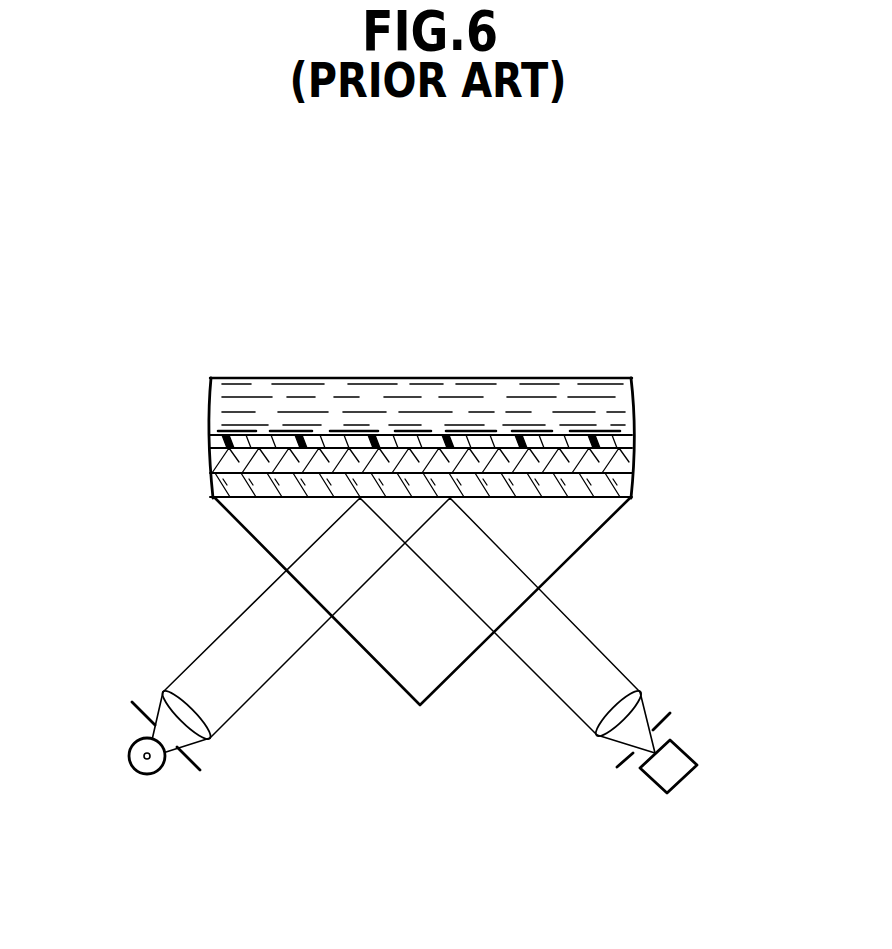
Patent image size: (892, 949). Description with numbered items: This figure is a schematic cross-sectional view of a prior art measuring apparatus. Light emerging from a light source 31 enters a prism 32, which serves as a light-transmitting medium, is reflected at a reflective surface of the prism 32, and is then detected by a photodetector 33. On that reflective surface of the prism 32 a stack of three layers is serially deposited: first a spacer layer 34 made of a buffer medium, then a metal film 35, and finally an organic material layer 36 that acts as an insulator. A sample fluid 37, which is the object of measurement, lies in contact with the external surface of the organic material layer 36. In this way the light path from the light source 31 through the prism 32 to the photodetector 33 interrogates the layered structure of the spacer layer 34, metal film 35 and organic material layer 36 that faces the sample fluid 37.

The light source 31 is at (130, 758).
The prism 32 is at (362, 636).
The photodetector 33 is at (680, 765).
The spacer layer 34 is at (633, 497).
The metal film 35 is at (208, 458).
The organic material layer 36 is at (633, 443).
The sample fluid 37 is at (210, 400).